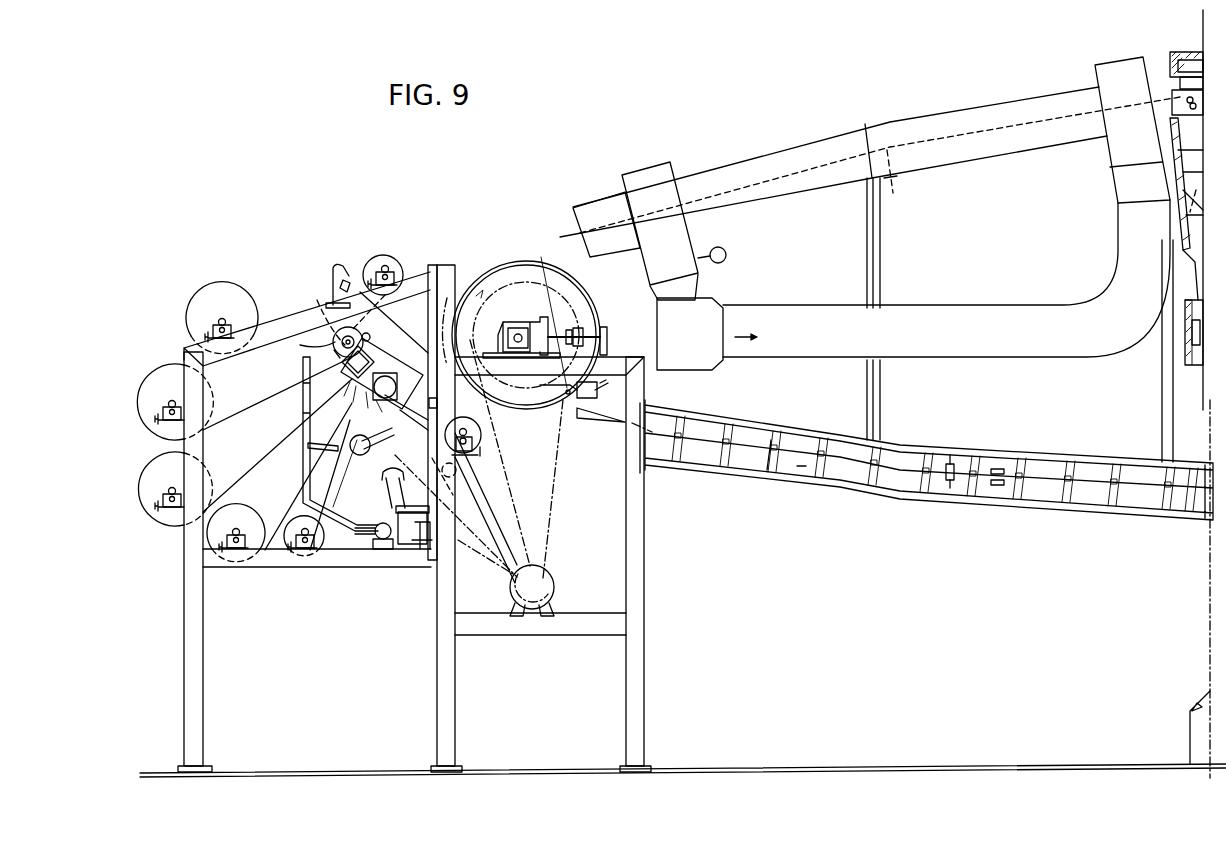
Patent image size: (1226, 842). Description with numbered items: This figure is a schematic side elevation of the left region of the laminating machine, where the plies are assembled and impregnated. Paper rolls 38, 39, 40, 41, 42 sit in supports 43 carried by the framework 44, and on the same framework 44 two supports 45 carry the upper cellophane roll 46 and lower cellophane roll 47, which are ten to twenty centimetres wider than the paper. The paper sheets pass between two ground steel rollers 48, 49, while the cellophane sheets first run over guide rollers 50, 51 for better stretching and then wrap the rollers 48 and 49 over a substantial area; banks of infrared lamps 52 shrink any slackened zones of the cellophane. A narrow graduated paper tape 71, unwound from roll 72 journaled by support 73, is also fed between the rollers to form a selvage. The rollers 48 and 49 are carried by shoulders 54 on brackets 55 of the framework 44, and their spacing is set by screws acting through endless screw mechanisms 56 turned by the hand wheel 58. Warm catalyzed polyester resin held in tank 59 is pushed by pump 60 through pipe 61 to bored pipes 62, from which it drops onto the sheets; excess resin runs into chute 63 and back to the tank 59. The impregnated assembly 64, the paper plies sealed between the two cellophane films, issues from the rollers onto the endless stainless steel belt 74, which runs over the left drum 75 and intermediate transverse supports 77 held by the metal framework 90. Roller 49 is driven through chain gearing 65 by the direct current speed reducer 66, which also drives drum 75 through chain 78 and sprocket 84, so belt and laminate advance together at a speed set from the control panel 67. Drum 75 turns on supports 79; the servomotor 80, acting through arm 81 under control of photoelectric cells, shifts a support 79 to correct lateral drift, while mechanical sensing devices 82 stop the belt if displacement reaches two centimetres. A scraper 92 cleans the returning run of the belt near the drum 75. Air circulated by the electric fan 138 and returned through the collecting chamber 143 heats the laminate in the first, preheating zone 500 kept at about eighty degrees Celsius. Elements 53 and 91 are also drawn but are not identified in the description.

The paper roll 38 is at (320, 550).
The paper roll 39 is at (262, 549).
The paper roll 40 is at (135, 477).
The paper roll 41 is at (145, 428).
The paper roll 42 is at (198, 296).
The supports 43 is at (208, 333).
The framework 44 is at (188, 560).
The supports 45 is at (390, 287).
The upper cellophane roll 46 is at (383, 262).
The lower cellophane roll 47 is at (481, 436).
The ground steel roller 48 is at (376, 333).
The ground steel roller 49 is at (372, 353).
The guide roller 50 is at (317, 307).
The guide roller 51 is at (392, 478).
The bank of infrared lamps 52 is at (348, 263).
The guide plate 53 is at (458, 473).
The shoulder 54 is at (407, 368).
The brackets 55 is at (455, 403).
The endless screw mechanism 56 is at (335, 342).
The hand wheel 58 is at (352, 328).
The tank 59 is at (422, 547).
The pump 60 is at (382, 552).
The pipe 61 is at (362, 537).
The bored pipes 62 is at (302, 473).
The chute 63 is at (390, 517).
The impregnated assembly 64 is at (402, 337).
The chain gearing 65 is at (483, 546).
The direct current speed reducer 66 is at (555, 587).
The control panel 67 is at (1198, 730).
The narrow paper tape 71 is at (349, 473).
The roll 72 is at (356, 436).
The support 73 is at (360, 456).
The endless belt 74 is at (525, 258).
The drum 75 is at (587, 285).
The intermediate transverse supports 77 is at (767, 485).
The chain 78 is at (555, 543).
The support 79 is at (540, 319).
The servomotor 80 is at (565, 422).
The arm 81 is at (998, 488).
The mechanical sensing device 82 is at (948, 486).
The sprocket 84 is at (548, 296).
The metal framework 90 is at (803, 478).
The support 91 is at (613, 217).
The scraper 92 is at (601, 416).
The electric fan 138 is at (1200, 367).
The collecting chamber 143 is at (1182, 52).
The first heating zone 500 is at (747, 167).